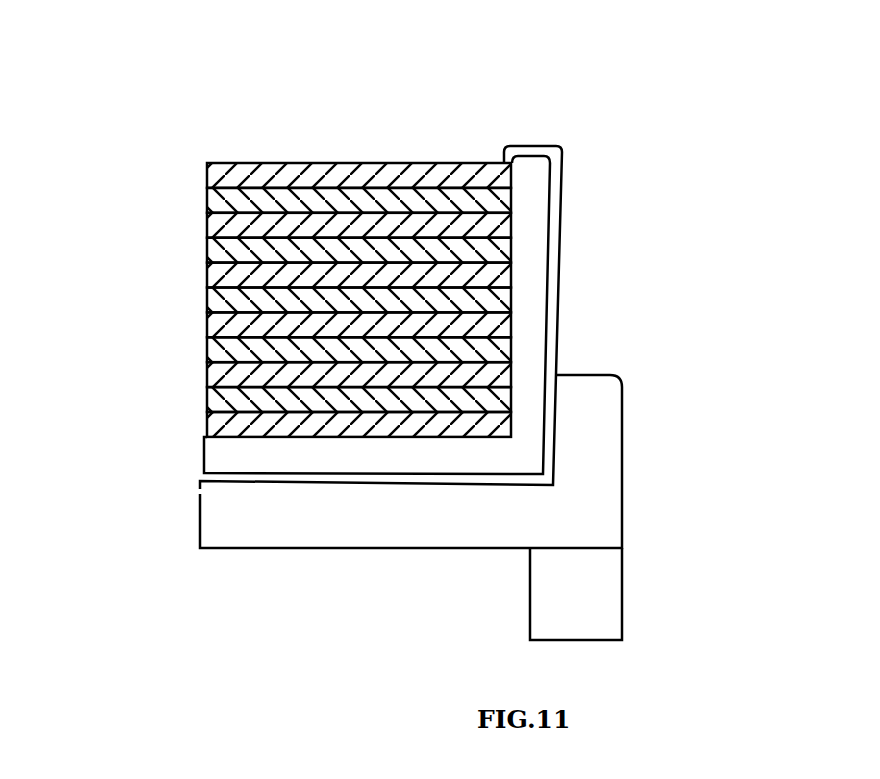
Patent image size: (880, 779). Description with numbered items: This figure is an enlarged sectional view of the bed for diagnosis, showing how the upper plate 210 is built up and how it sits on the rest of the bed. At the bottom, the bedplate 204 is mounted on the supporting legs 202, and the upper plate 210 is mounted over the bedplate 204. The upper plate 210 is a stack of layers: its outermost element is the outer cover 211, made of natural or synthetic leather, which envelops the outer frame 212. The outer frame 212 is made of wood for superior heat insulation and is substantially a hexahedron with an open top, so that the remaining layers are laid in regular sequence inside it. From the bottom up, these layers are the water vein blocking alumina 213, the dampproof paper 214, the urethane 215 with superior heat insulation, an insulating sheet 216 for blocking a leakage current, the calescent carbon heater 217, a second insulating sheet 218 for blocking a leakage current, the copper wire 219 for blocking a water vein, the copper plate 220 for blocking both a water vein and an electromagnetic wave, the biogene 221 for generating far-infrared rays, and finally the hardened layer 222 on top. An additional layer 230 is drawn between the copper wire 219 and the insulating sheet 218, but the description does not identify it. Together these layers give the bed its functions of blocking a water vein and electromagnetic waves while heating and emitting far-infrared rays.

The upper plate 210 is at (436, 157).
The hardened layer 222 is at (207, 170).
The biogene 221 is at (207, 195).
The copper plate 220 is at (207, 220).
The copper wire 219 is at (207, 245).
The layer 230 is at (207, 270).
The insulating sheet 218 is at (207, 294).
The calescent carbon heater 217 is at (207, 319).
The insulating sheet 216 is at (207, 344).
The urethane 215 is at (207, 369).
The dampproof paper 214 is at (207, 394).
The water vein blocking alumina 213 is at (207, 419).
The outer frame 212 is at (210, 452).
The outer cover 211 is at (204, 473).
The bedplate 204 is at (587, 441).
The supporting legs 202 is at (590, 600).